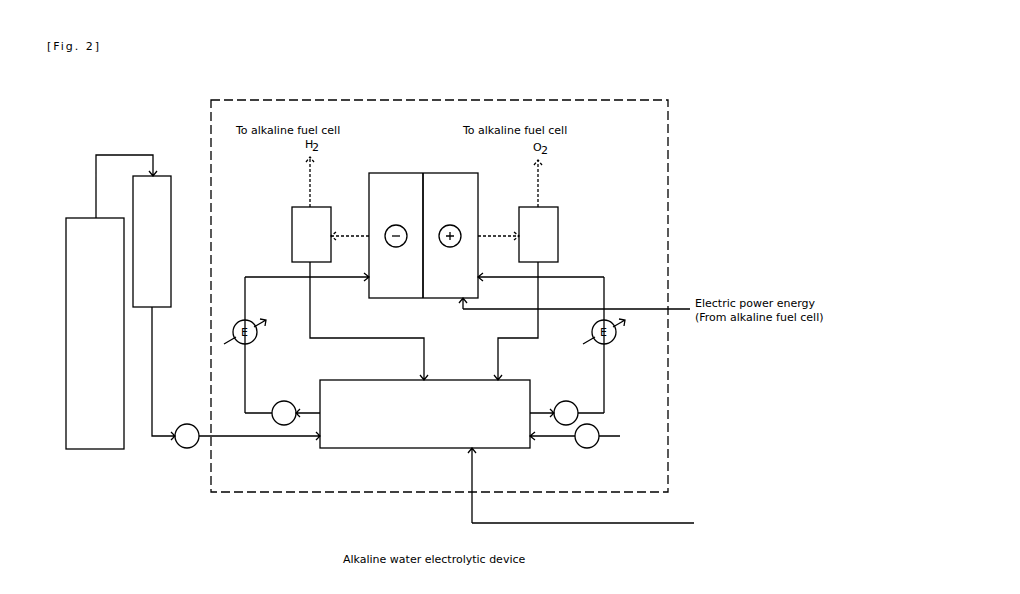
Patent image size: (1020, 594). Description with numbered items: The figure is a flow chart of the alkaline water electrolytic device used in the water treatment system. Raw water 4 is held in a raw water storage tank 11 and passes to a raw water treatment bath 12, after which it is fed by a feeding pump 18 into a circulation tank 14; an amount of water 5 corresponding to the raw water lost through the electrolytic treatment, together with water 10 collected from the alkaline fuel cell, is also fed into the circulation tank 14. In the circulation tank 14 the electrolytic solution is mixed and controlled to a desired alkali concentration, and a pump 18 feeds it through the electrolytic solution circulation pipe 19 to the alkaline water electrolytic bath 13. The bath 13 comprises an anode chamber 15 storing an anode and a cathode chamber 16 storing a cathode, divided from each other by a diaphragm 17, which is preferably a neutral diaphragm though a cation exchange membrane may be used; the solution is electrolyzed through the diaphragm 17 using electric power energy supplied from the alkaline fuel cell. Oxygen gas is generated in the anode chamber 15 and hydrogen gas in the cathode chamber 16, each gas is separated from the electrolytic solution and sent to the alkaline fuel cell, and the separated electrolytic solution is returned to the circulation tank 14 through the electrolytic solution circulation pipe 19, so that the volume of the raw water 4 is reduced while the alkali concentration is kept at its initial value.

The raw water 4 is at (236, 383).
The water 5 is at (592, 438).
The water 10 is at (647, 492).
The raw water storage tank 11 is at (95, 333).
The raw water treatment bath 12 is at (133, 231).
The alkaline water electrolytic bath 13 is at (423, 227).
The circulation tank 14 is at (425, 414).
The anode chamber 15 is at (450, 216).
The cathode chamber 16 is at (396, 216).
The diaphragm 17 is at (426, 300).
The feeding pump 18 is at (389, 424).
The electrolytic solution circulation pipe 19 is at (425, 337).